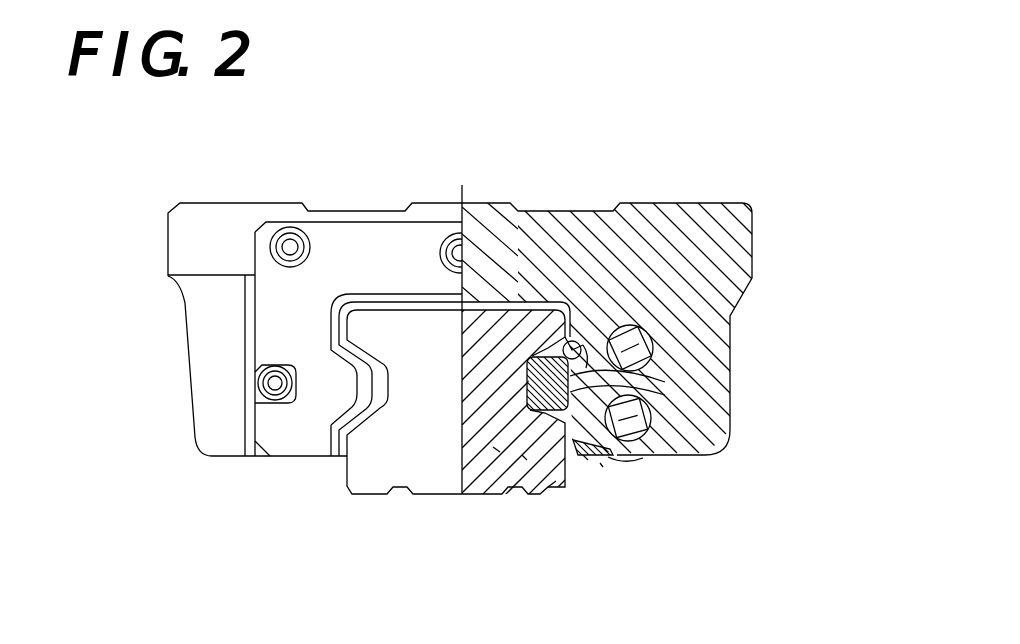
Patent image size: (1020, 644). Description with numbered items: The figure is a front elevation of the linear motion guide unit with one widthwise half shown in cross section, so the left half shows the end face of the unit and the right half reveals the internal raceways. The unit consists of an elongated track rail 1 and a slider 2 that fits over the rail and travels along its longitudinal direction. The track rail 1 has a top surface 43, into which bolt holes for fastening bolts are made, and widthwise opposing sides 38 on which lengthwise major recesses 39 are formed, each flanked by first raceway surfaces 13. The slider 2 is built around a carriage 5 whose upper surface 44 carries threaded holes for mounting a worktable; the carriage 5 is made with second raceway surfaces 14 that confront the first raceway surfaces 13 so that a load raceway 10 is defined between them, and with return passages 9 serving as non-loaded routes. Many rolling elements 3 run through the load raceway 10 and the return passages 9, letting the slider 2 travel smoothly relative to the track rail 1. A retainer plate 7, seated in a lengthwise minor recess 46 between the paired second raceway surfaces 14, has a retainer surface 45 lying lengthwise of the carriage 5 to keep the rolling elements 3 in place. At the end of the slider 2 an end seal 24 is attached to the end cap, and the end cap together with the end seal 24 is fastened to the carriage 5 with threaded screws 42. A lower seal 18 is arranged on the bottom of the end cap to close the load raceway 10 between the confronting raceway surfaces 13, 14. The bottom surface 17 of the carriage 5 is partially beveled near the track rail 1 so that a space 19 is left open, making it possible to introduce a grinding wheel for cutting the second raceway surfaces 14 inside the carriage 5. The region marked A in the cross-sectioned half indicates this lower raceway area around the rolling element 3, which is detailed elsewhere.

The track rail 1 is at (423, 438).
The slider 2 is at (542, 352).
The rolling element 3 is at (572, 350).
The carriage 5 is at (178, 247).
The retainer plate 7 is at (493, 447).
The return passage 9 is at (653, 342).
The load raceway 10 is at (578, 348).
The first raceway surface 13 is at (537, 357).
The second raceway surface 14 is at (600, 393).
The bottom surface 17 is at (637, 460).
The lower seal 18 is at (588, 458).
The space 19 is at (632, 463).
The end seal 24 is at (297, 438).
The widthwise opposing side 38 is at (337, 470).
The major recess 39 is at (440, 308).
The threaded screw 42 is at (290, 247).
The top surface 43 is at (397, 307).
The upper surface 44 is at (200, 202).
The retainer surface 45 is at (583, 345).
The minor recess 46 is at (523, 455).
The region A is at (600, 463).